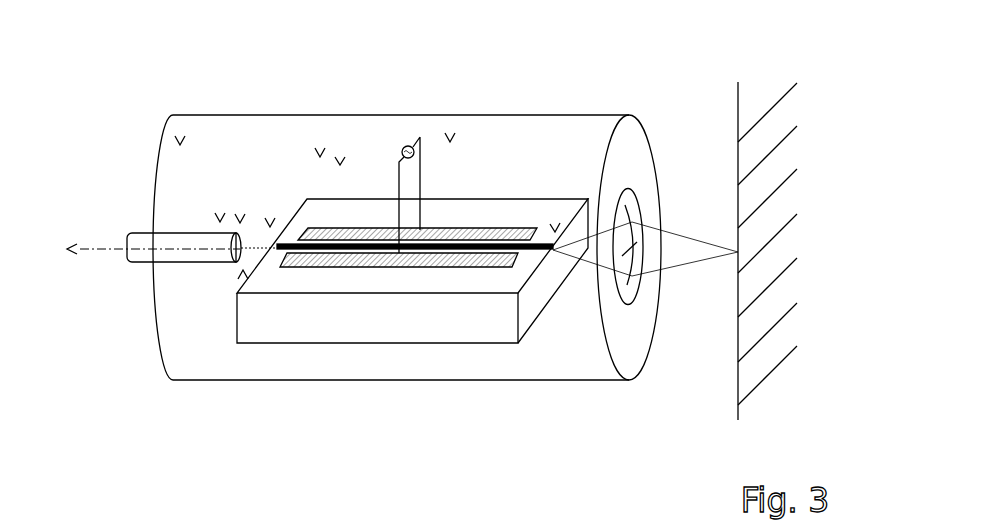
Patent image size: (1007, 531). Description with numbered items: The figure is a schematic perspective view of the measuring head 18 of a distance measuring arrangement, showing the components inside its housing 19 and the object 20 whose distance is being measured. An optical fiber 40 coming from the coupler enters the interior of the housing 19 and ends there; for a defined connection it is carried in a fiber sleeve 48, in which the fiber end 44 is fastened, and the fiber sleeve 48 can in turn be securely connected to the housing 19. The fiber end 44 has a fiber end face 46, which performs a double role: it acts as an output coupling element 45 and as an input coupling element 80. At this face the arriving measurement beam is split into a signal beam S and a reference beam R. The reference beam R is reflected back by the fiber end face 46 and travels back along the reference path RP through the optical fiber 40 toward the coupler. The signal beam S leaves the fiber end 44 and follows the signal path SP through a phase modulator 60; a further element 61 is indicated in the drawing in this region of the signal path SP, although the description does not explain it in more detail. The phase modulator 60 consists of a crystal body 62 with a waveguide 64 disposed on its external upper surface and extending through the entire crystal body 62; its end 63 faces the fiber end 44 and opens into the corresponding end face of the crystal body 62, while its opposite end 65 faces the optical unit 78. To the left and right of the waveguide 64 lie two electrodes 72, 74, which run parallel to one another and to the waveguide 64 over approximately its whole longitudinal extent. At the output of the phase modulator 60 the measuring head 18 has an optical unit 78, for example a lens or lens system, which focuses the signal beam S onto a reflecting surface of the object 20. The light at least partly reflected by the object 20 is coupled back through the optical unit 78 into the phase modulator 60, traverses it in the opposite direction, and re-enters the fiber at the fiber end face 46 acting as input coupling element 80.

The measuring head 18 is at (387, 80).
The housing 19 is at (523, 115).
The object 20 is at (738, 93).
The optical fiber 40 is at (120, 247).
The fiber end 44 is at (219, 212).
The output coupling element 45 is at (241, 214).
The fiber end face 46 is at (237, 265).
The fiber sleeve 48 is at (138, 236).
The phase modulator 60 is at (451, 133).
The sample space 61 is at (341, 157).
The crystal body 62 is at (422, 317).
The waveguide end facing the fiber end 63 is at (272, 217).
The waveguide 64 is at (487, 250).
The waveguide end facing the optical unit 65 is at (558, 225).
The electrode 72 is at (373, 267).
The electrode 74 is at (522, 228).
The optical unit 78 is at (635, 205).
The input coupling element 80 is at (245, 280).
The reference beam R is at (115, 252).
The reference path RP is at (179, 137).
The signal beam S is at (693, 263).
The signal path SP is at (319, 148).